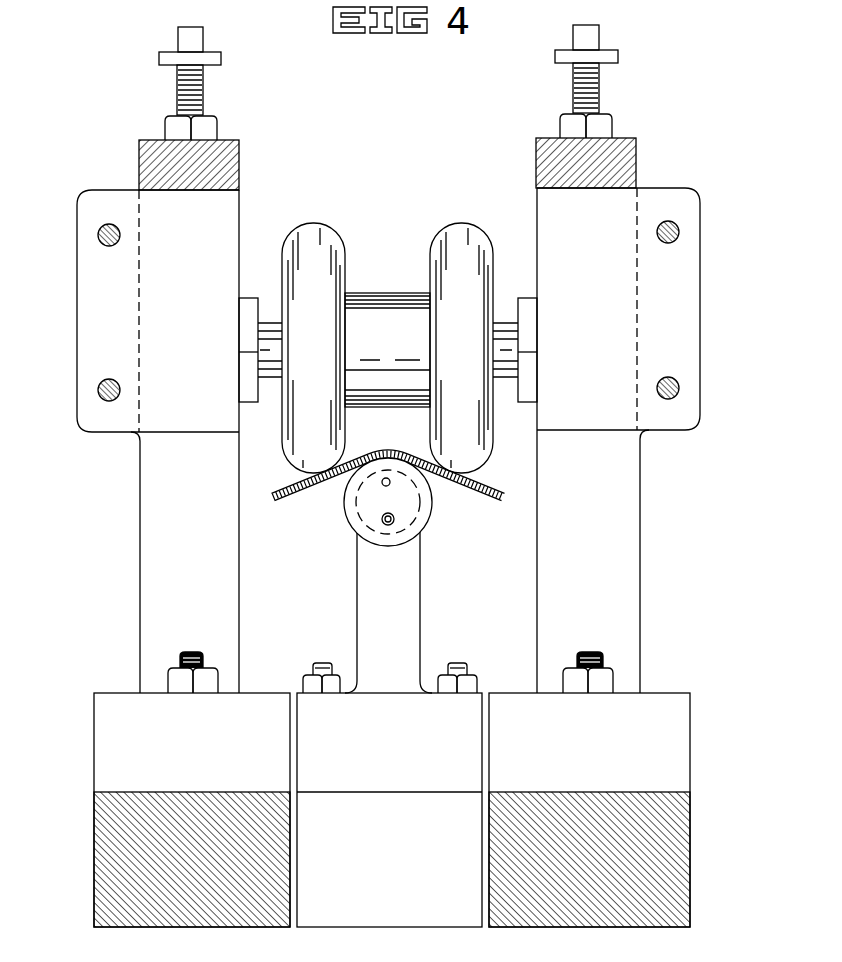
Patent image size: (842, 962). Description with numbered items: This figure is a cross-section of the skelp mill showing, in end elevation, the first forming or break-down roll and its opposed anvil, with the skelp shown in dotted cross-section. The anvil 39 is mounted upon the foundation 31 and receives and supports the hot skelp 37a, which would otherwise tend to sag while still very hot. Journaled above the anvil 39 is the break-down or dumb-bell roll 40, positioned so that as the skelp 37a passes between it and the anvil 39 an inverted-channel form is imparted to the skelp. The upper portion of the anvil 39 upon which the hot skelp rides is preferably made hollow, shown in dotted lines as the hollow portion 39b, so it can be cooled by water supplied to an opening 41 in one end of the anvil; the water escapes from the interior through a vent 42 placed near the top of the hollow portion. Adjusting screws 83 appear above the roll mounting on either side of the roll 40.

The foundation 31 is at (108, 838).
The skelp 37a is at (478, 497).
The anvil 39 is at (405, 592).
The hollow portion of the anvil 39b is at (352, 505).
The break-down or dumb-bell roll 40 is at (393, 313).
The opening 41 is at (381, 523).
The vent 42 is at (391, 484).
The adjusting screw 83 is at (176, 88).